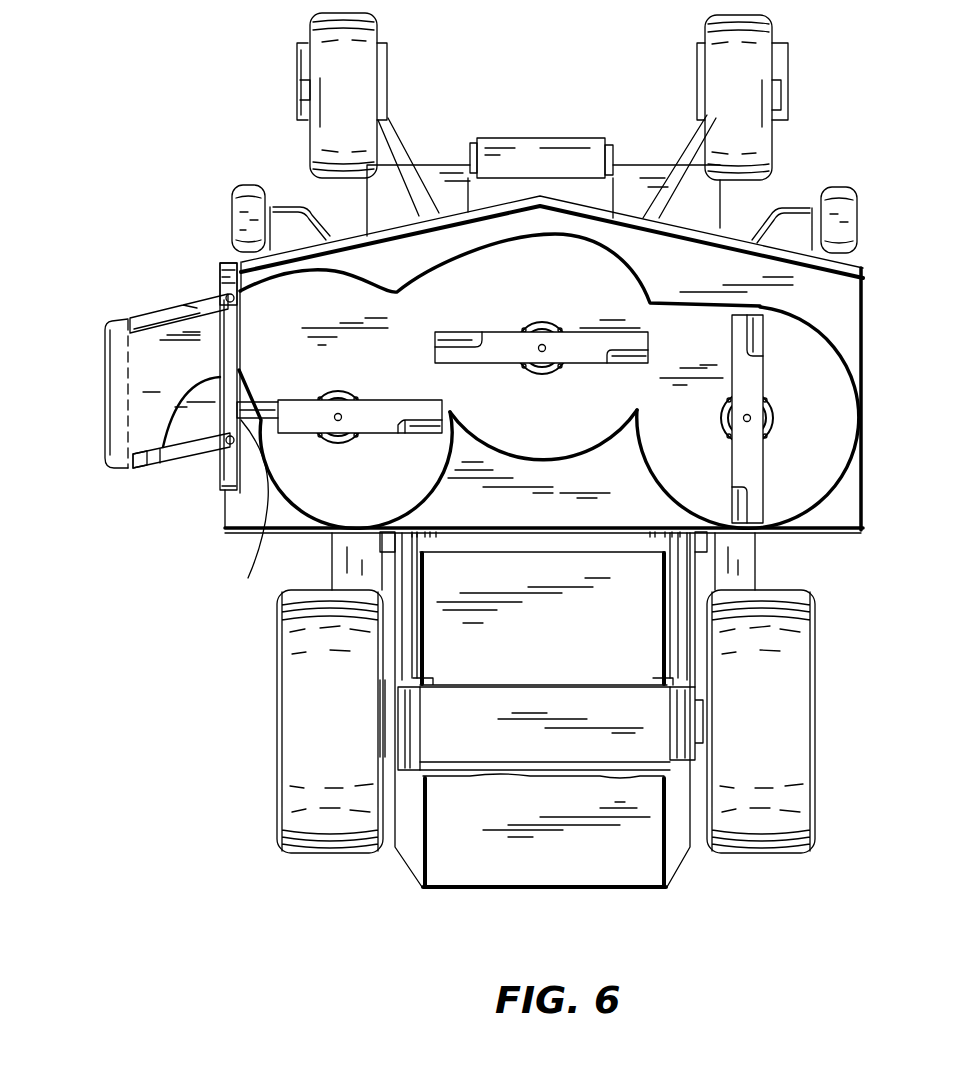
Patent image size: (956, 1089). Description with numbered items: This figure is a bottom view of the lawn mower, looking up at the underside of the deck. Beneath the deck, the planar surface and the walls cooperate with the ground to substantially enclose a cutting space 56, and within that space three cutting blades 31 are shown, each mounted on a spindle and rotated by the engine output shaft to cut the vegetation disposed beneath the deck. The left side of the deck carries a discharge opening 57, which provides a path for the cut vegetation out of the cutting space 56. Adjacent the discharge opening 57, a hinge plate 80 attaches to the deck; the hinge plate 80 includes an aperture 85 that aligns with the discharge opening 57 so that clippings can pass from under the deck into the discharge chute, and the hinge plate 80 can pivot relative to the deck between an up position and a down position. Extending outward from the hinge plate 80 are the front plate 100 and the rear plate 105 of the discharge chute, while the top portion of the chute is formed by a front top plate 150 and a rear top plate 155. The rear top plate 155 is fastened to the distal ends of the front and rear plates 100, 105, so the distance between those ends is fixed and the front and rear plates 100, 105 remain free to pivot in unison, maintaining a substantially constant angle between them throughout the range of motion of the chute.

The cutting blade 31 is at (272, 428).
The cutting space 56 is at (520, 262).
The discharge opening 57 is at (244, 516).
The hinge plate 80 is at (220, 482).
The aperture 85 is at (221, 368).
The front plate 100 is at (160, 306).
The rear plate 105 is at (147, 466).
The front top plate 150 is at (177, 433).
The rear top plate 155 is at (143, 363).